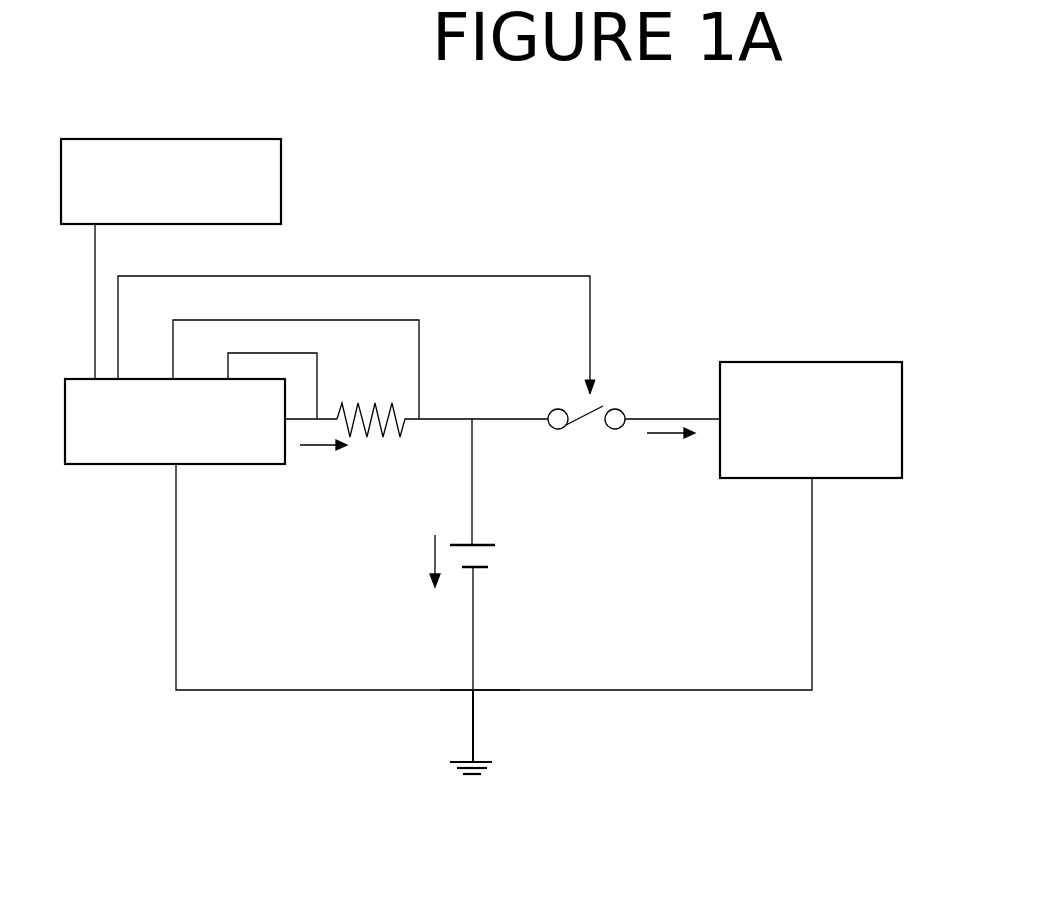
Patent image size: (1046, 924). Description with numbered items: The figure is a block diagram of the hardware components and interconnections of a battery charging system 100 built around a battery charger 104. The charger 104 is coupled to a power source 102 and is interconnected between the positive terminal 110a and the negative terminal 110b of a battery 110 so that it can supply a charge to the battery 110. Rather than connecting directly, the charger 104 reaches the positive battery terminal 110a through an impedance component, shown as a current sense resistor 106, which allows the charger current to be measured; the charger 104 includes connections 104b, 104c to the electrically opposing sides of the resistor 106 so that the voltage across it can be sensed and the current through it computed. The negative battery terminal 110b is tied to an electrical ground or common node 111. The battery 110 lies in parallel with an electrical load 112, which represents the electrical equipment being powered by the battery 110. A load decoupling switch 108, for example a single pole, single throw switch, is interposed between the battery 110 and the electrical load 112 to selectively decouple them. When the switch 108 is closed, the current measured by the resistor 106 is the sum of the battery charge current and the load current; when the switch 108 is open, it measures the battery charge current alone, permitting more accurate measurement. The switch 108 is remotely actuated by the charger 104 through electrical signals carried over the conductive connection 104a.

The charging system 100 is at (712, 242).
The power source 102 is at (283, 162).
The battery charger 104 is at (212, 464).
The connection 104a is at (590, 317).
The connection 104b is at (317, 360).
The connection 104c is at (419, 352).
The current sense resistor 106 is at (366, 433).
The load decoupling switch 108 is at (566, 427).
The battery 110 is at (478, 568).
The positive battery terminal 110a is at (472, 425).
The negative battery terminal 110b is at (476, 688).
The electrical ground 111 is at (494, 766).
The electrical load 112 is at (845, 478).